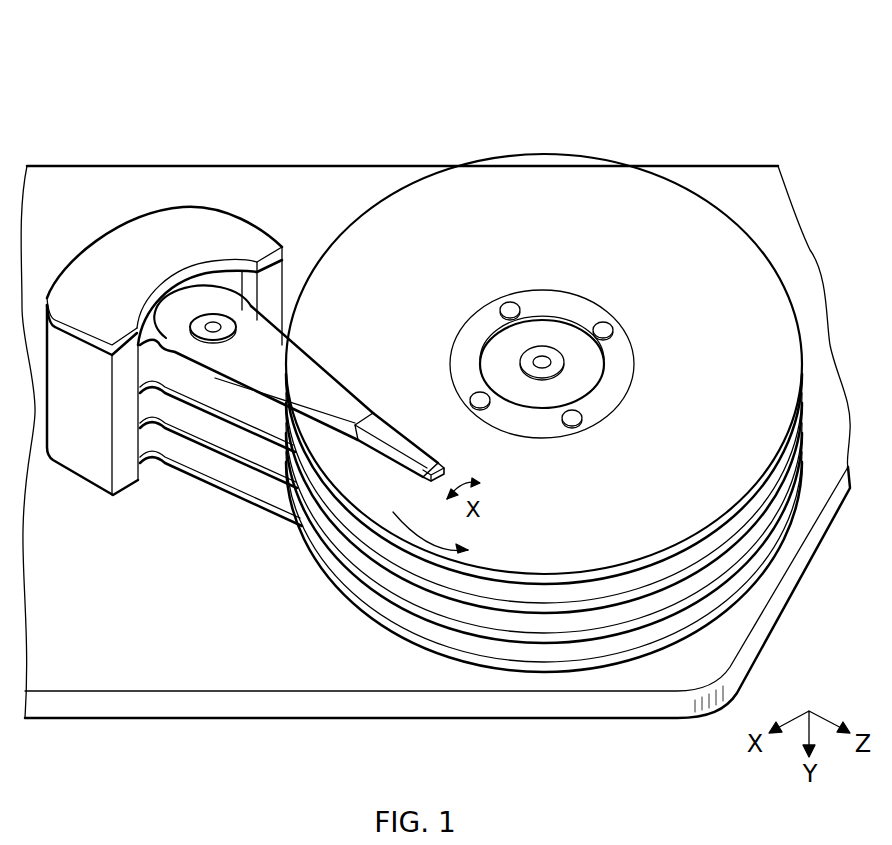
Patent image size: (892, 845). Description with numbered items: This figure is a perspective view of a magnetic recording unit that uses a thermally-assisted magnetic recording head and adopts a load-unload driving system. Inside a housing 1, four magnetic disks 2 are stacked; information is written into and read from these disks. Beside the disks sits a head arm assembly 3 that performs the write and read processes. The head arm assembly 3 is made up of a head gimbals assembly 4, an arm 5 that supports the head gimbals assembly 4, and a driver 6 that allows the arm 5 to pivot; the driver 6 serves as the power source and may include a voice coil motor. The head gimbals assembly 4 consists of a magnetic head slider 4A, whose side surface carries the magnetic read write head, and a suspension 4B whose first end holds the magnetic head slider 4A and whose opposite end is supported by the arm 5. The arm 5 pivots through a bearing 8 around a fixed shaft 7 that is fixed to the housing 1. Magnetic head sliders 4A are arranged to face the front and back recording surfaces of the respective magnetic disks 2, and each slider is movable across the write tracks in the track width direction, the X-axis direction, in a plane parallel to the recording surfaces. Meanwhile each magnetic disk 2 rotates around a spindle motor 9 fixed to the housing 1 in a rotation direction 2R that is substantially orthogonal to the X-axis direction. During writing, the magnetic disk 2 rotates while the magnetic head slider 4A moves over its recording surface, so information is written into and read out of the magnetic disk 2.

The housing 1 is at (725, 183).
The magnetic disk 2 is at (737, 337).
The rotation direction 2R is at (433, 533).
The head arm assembly 3 is at (583, 50).
The head gimbals assembly 4 is at (440, 96).
The magnetic head slider 4A is at (436, 462).
The suspension 4B is at (397, 443).
The arm 5 is at (318, 390).
The driver 6 is at (118, 212).
The fixed shaft 7 is at (215, 316).
The bearing 8 is at (193, 318).
The spindle motor 9 is at (540, 380).